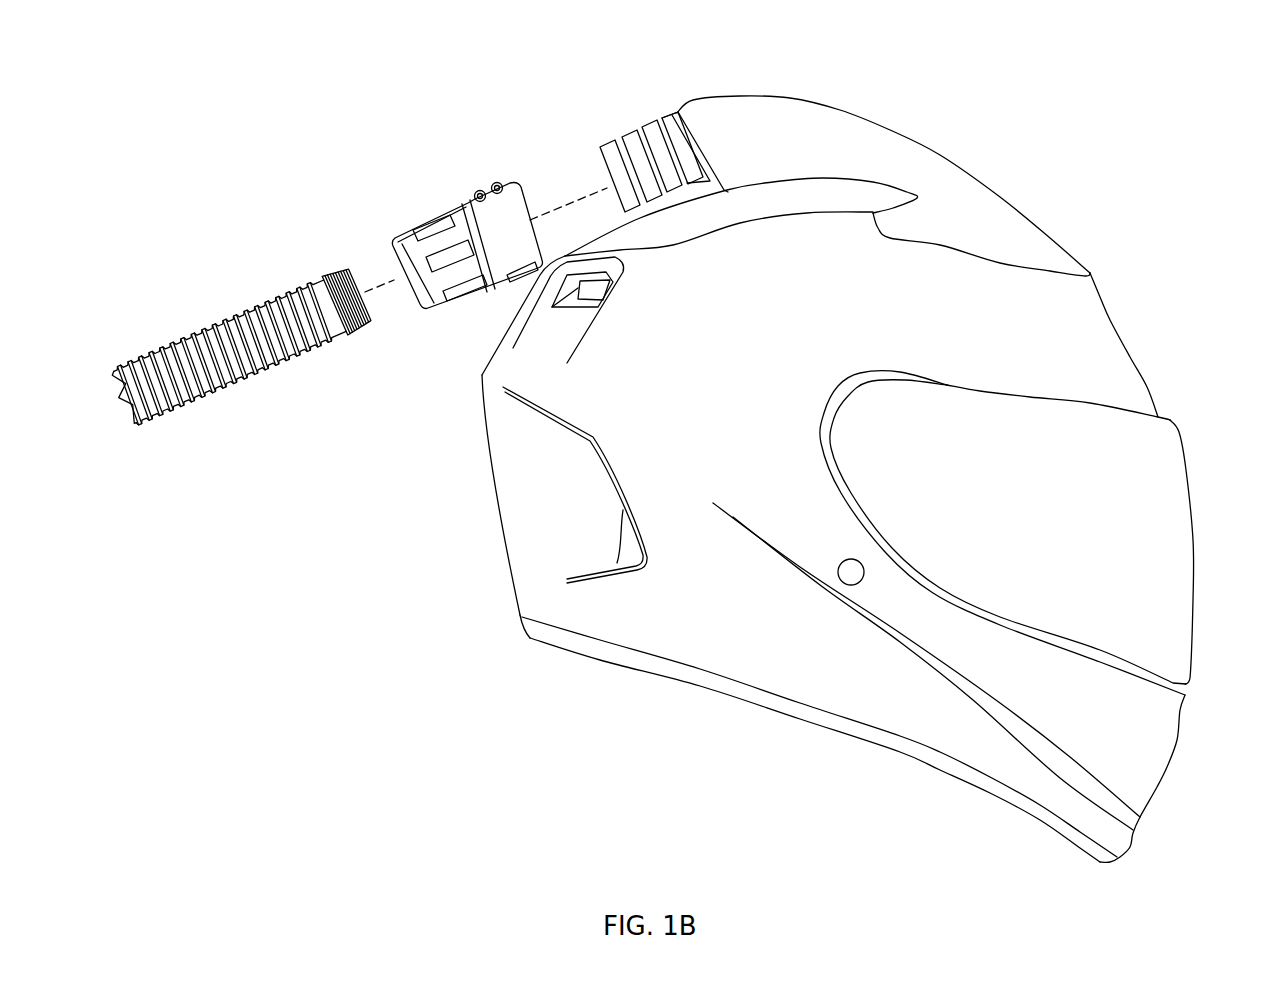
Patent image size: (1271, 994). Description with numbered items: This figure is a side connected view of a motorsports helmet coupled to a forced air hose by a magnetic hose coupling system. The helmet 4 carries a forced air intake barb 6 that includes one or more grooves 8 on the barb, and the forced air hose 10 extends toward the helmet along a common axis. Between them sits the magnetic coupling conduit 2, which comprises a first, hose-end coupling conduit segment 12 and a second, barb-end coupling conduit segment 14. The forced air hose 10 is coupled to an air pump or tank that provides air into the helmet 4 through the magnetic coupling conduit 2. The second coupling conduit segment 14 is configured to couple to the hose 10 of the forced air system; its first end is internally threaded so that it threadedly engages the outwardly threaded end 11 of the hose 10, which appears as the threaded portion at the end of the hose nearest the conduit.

The magnetic coupling conduit 2 is at (425, 183).
The helmet 4 is at (1068, 328).
The forced air intake barb 6 is at (677, 110).
The grooves 8 is at (623, 137).
The forced air hose 10 is at (261, 307).
The outwardly threaded end 11 is at (337, 275).
The first, hose-end coupling conduit segment 12 is at (462, 238).
The second, barb-end coupling conduit segment 14 is at (403, 243).